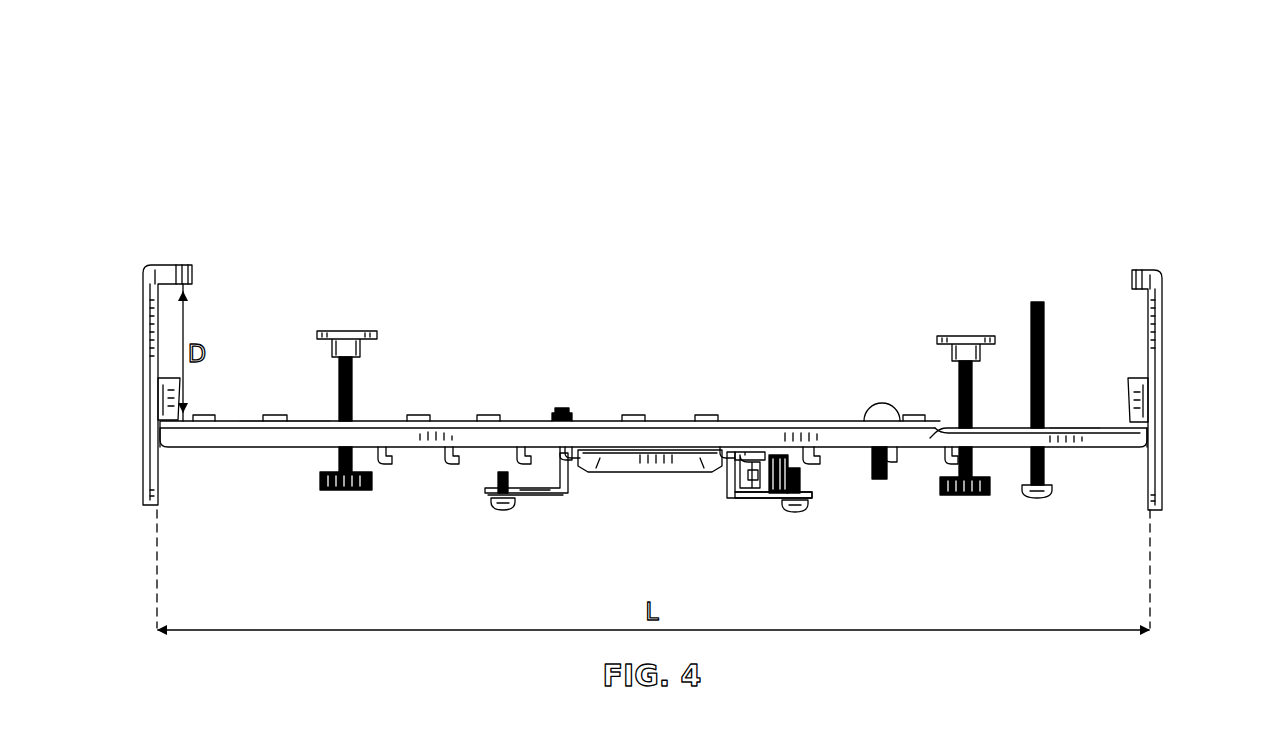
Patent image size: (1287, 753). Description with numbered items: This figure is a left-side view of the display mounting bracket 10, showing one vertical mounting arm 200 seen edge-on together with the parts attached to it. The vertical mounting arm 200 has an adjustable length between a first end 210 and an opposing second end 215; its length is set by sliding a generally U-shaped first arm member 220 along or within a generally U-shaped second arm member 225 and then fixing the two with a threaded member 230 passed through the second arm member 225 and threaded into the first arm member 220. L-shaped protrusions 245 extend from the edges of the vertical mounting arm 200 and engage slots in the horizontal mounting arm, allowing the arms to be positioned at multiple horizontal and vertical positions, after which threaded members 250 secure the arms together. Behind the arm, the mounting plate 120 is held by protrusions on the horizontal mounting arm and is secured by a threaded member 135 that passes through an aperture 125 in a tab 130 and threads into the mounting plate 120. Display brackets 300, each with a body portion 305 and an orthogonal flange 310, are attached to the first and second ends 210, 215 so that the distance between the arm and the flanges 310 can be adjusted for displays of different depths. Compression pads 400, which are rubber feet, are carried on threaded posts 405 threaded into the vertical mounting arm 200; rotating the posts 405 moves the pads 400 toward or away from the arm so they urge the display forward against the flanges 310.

The display mounting bracket 10 is at (288, 70).
The mounting plate 120 is at (530, 500).
The aperture 125 is at (732, 492).
The tab 130 is at (776, 498).
The threaded member 135 is at (792, 464).
The vertical mounting arm 200 is at (238, 449).
The first end 210 is at (1147, 436).
The second end 215 is at (160, 435).
The first arm member 220 is at (1074, 430).
The second arm member 225 is at (240, 434).
The threaded member 230 is at (882, 418).
The protrusions 245 is at (383, 462).
The threaded members 250 is at (561, 411).
The display bracket 300 is at (138, 330).
The body portion 305 is at (148, 352).
The flange 310 is at (168, 266).
The compression pad 400 is at (345, 331).
The threaded post 405 is at (338, 375).